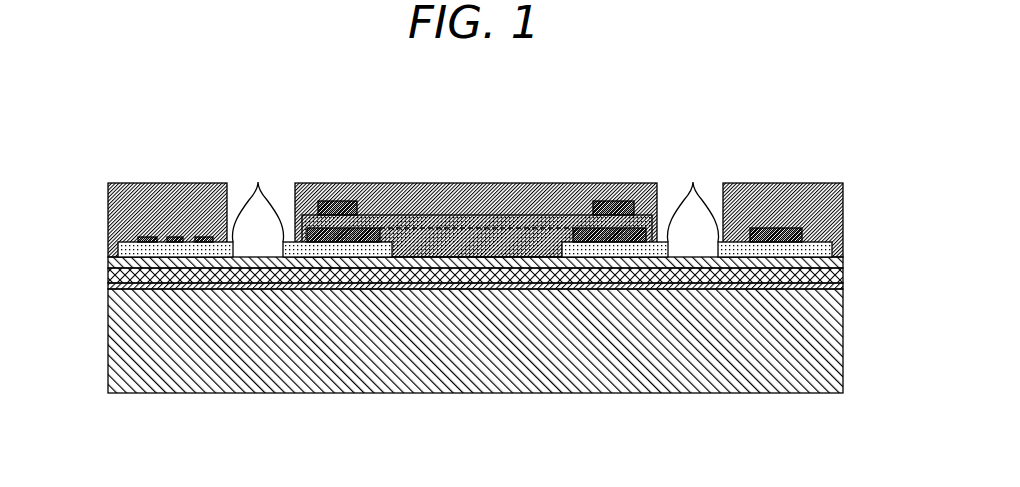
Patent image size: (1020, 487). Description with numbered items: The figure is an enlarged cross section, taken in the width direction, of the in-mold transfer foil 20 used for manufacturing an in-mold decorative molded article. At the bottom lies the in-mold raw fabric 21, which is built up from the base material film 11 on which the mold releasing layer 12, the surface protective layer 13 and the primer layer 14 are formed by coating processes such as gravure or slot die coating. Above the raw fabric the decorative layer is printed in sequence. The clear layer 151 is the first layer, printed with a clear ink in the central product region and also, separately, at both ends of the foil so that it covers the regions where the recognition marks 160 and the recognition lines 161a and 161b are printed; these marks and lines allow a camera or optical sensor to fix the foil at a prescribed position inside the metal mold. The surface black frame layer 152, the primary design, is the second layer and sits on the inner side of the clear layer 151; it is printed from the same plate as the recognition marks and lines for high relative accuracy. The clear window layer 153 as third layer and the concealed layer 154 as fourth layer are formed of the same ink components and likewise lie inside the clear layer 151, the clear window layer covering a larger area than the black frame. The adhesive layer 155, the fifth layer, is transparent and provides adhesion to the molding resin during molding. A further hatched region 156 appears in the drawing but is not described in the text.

The base material film 11 is at (108, 325).
The mold releasing layer 12 is at (108, 288).
The surface protective layer 13 is at (108, 275).
The primer layer 14 is at (449, 254).
The in-mold transfer foil 20 is at (462, 246).
The in-mold raw fabric 21 is at (428, 315).
The clear layer 151 is at (258, 182).
The surface black frame layer 152 is at (368, 229).
The clear window layer 153 is at (478, 222).
The concealed layer 154 is at (336, 201).
The adhesive layer 155 is at (320, 183).
The sealing resin layer 156 is at (135, 183).
The recognition marks 160 is at (177, 238).
The recognition line 161a is at (208, 238).
The recognition line 161b is at (770, 229).